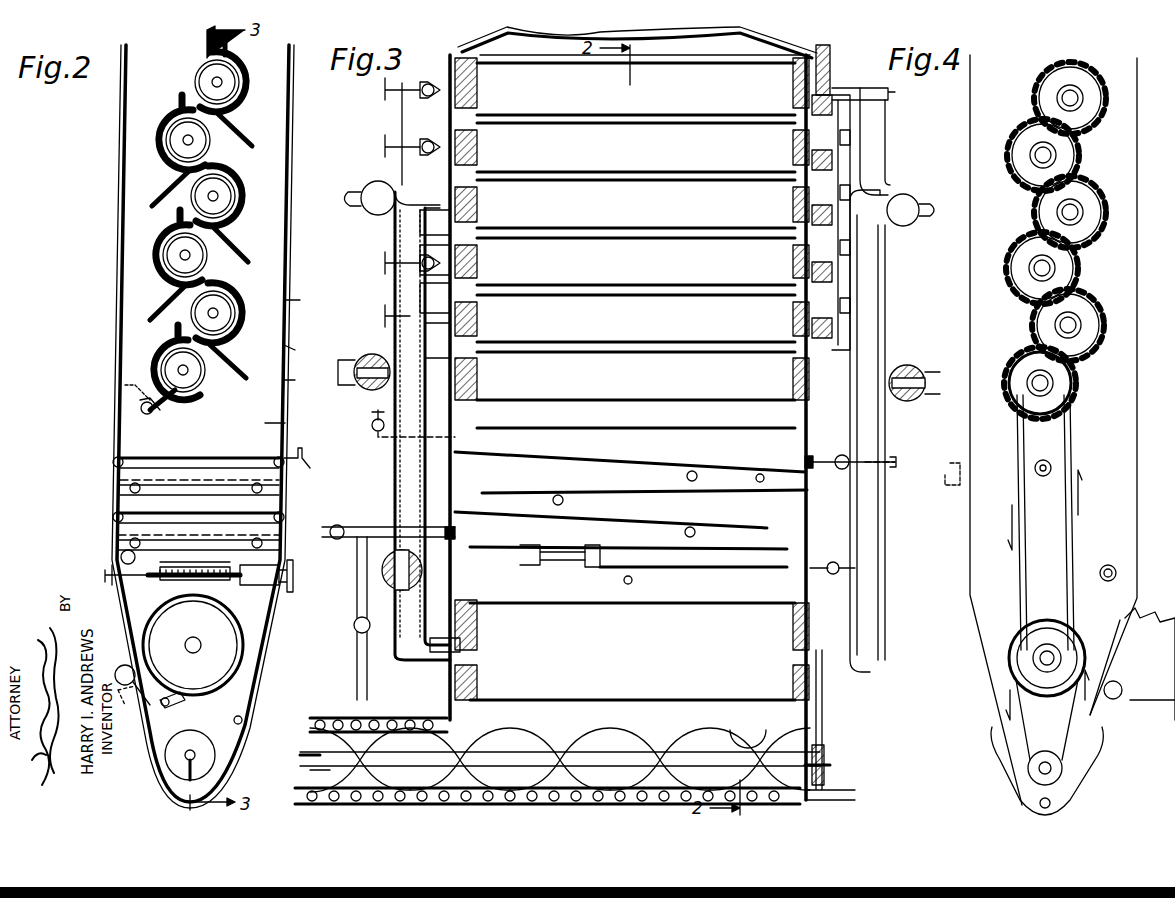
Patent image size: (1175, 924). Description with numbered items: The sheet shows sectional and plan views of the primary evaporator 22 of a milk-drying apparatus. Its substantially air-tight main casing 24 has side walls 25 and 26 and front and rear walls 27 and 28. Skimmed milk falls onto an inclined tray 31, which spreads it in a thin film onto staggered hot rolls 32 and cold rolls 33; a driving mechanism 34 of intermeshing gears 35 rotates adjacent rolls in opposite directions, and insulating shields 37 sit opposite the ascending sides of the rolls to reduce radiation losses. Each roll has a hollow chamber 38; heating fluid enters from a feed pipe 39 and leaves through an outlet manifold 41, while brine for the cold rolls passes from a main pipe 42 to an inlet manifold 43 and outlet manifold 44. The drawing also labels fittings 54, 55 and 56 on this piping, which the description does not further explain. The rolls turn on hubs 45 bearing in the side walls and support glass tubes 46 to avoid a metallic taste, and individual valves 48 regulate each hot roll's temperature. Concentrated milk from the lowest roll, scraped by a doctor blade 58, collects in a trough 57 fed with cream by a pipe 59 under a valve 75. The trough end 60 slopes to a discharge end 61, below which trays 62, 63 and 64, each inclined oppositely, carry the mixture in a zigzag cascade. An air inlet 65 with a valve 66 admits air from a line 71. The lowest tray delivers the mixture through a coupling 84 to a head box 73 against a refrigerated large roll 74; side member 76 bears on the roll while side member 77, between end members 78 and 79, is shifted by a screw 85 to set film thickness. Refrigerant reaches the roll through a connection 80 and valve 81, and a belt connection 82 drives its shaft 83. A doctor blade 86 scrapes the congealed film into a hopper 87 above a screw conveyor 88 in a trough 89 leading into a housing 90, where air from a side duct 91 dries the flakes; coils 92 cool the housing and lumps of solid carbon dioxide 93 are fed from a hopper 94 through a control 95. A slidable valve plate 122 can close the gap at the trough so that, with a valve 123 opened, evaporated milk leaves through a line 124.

In FIG. 3, the primary evaporator 22 is at (845, 42).
In FIG. 2, the main casing 24 is at (301, 349).
In FIG. 3, the main casing 24 is at (440, 468).
In FIG. 3, the side wall 25 is at (445, 490).
In FIG. 2, the side wall 26 is at (289, 424).
In FIG. 3, the side wall 26 is at (810, 530).
In FIG. 4, the side wall 26 is at (970, 432).
In FIG. 2, the front wall 27 is at (120, 262).
In FIG. 2, the rear wall 28 is at (301, 311).
In FIG. 3, the rear wall 28 is at (332, 315).
In FIG. 3, the inclined tray 31 is at (637, 42).
In FIG. 2, the hot roll 32 is at (195, 80).
In FIG. 3, the hot roll 32 is at (636, 202).
In FIG. 2, the cold roll 33 is at (190, 200).
In FIG. 3, the cold roll 33 is at (636, 294).
In FIG. 3, the driving mechanism 34 is at (845, 125).
In FIG. 4, the driving mechanism 34 is at (1030, 300).
In FIG. 4, the intermeshing gears 35 is at (1025, 160).
In FIG. 2, the insulating shield 37 is at (165, 150).
In FIG. 2, the hollow chamber 38 is at (210, 72).
In FIG. 3, the feed pipe 39 is at (395, 175).
In FIG. 3, the outlet manifold 41 is at (870, 170).
In FIG. 2, the main pipe 42 is at (299, 380).
In FIG. 3, the main pipe 42 is at (337, 372).
In FIG. 3, the inlet manifold 43 is at (415, 338).
In FIG. 3, the outlet manifold 44 is at (878, 570).
In FIG. 2, the hub 45 is at (240, 76).
In FIG. 3, the hub 45 is at (480, 132).
In FIG. 2, the glass tube 46 is at (198, 46).
In FIG. 3, the glass tube 46 is at (698, 122).
In FIG. 3, the individual valve 48 is at (385, 90).
In FIG. 3, the pipe connection 54 is at (895, 95).
In FIG. 3, the valve 55 is at (370, 215).
In FIG. 3, the valve 56 is at (385, 372).
In FIG. 3, the trough 57 is at (630, 453).
In FIG. 2, the doctor blade 58 is at (185, 405).
In FIG. 3, the doctor blade 58 is at (636, 416).
In FIG. 3, the pipe 59 is at (380, 437).
In FIG. 3, the end of trough 60 is at (710, 470).
In FIG. 3, the discharge end 61 is at (757, 472).
In FIG. 3, the tray 62 is at (655, 495).
In FIG. 3, the tray 63 is at (605, 518).
In FIG. 3, the tray 64 is at (530, 540).
In FIG. 3, the air inlet 65 is at (458, 533).
In FIG. 3, the valve 66 is at (337, 540).
In FIG. 3, the line 71 is at (385, 518).
In FIG. 2, the head box 73 is at (240, 587).
In FIG. 3, the head box 73 is at (632, 592).
In FIG. 2, the large roll 74 is at (170, 608).
In FIG. 3, the large roll 74 is at (525, 612).
In FIG. 3, the valve 75 is at (372, 425).
In FIG. 2, the side member 76 is at (160, 582).
In FIG. 3, the side member 76 is at (638, 552).
In FIG. 2, the side member 77 is at (225, 590).
In FIG. 3, the end member 78 is at (455, 592).
In FIG. 3, the end member 79 is at (800, 582).
In FIG. 3, the connection 80 is at (430, 655).
In FIG. 3, the valve 81 is at (385, 585).
In FIG. 3, the belt connection 82 is at (820, 712).
In FIG. 4, the belt connection 82 is at (1042, 735).
In FIG. 3, the shaft 83 is at (830, 768).
In FIG. 4, the shaft 83 is at (1040, 772).
In FIG. 3, the coupling 84 is at (520, 568).
In FIG. 2, the screw 85 is at (281, 590).
In FIG. 2, the doctor blade 86 is at (190, 706).
In FIG. 3, the doctor blade 86 is at (565, 712).
In FIG. 3, the hopper 87 is at (824, 742).
In FIG. 3, the screw conveyor 88 is at (650, 745).
In FIG. 3, the trough 89 is at (500, 760).
In FIG. 3, the housing 90 is at (310, 775).
In FIG. 3, the side duct 91 is at (368, 690).
In FIG. 3, the coil 92 is at (345, 700).
In FIG. 2, the solid carbon dioxide 93 is at (165, 650).
In FIG. 3, the hopper 94 is at (748, 743).
In FIG. 4, the hopper 94 is at (1150, 625).
In FIG. 2, the control 95 is at (130, 690).
In FIG. 4, the control 95 is at (1122, 690).
In FIG. 2, the valve plate 122 is at (217, 506).
In FIG. 3, the valve plate 122 is at (790, 462).
In FIG. 4, the valve plate 122 is at (936, 465).
In FIG. 3, the valve 123 is at (842, 452).
In FIG. 4, the valve 123 is at (1043, 478).
In FIG. 3, the line 124 is at (883, 470).
In FIG. 4, the line 124 is at (1043, 455).